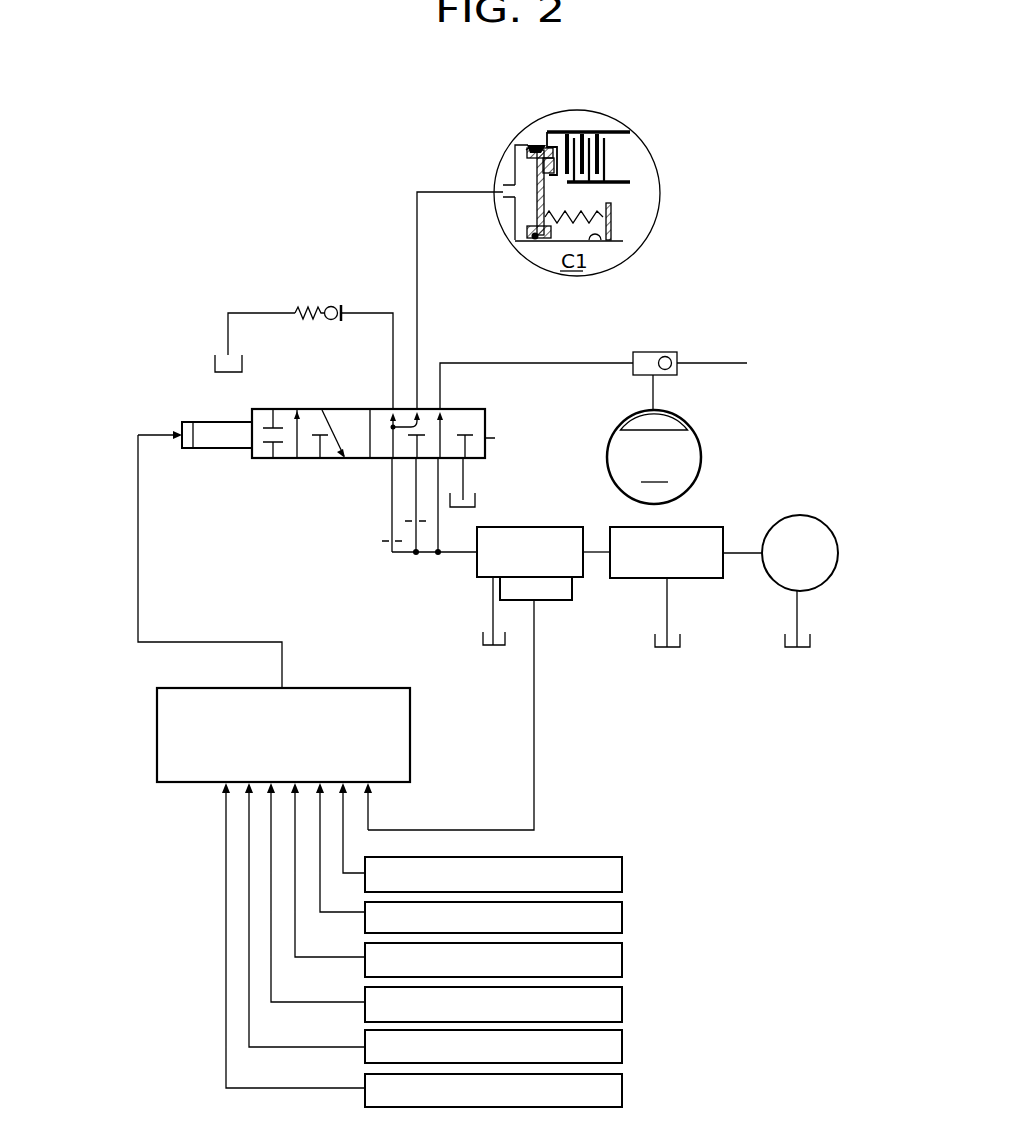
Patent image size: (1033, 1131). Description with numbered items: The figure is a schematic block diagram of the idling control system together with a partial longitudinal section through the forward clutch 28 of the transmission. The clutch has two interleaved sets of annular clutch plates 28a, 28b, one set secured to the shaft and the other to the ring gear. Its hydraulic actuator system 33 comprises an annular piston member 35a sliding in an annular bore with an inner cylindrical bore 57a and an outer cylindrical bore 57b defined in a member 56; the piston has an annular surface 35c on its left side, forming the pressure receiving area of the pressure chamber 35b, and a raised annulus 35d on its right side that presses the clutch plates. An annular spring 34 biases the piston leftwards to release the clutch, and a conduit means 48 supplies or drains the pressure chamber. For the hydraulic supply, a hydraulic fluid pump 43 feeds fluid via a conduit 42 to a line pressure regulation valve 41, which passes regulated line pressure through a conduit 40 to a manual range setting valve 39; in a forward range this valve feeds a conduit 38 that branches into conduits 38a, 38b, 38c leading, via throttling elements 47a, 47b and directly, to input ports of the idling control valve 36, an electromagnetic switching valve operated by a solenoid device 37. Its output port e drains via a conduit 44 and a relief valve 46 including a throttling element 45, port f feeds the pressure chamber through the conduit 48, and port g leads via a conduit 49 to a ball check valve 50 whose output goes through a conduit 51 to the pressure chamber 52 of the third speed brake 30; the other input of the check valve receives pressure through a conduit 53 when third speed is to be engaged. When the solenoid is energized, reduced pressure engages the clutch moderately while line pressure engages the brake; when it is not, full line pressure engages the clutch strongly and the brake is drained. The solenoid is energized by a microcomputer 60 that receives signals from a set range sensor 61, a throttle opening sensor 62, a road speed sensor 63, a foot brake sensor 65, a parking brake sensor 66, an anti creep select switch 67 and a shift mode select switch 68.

The forward hydraulic clutch 28 is at (642, 137).
The set of annular clutch plates 28a is at (558, 132).
The set of annular clutch plates 28b is at (600, 177).
The third speed brake 30 is at (702, 457).
The hydraulic actuator system 33 is at (532, 137).
The annular spring 34 is at (612, 214).
The annular piston member 35a is at (528, 158).
The pressure chamber 35b is at (522, 178).
The annular surface 35c is at (534, 207).
The raised annulus 35d is at (552, 132).
The idling control valve 36 is at (490, 438).
The solenoid device 37 is at (220, 443).
The conduit 38 is at (465, 554).
The conduit 38a is at (392, 495).
The conduit 38b is at (415, 497).
The conduit 38c is at (437, 534).
The manual range setting valve 39 is at (530, 527).
The conduit 40 is at (598, 548).
The line pressure regulation valve 41 is at (697, 527).
The conduit 42 is at (743, 552).
The hydraulic fluid pump 43 is at (838, 534).
The conduit 44 is at (393, 357).
The throttling element 45 is at (344, 310).
The relief valve 46 is at (303, 325).
The throttling element 47a is at (382, 542).
The throttling element 47b is at (409, 550).
The conduit means 48 is at (419, 311).
The conduit 49 is at (568, 362).
The ball check valve 50 is at (662, 352).
The conduit 51 is at (655, 396).
The pressure chamber 52 is at (634, 420).
The conduit 53 is at (732, 362).
The member 56 is at (521, 247).
The inner cylindrical bore 57a is at (594, 242).
The outer cylindrical bore 57b is at (529, 153).
The microcomputer 60 is at (388, 688).
The set range sensor 61 is at (562, 600).
The throttle opening sensor 62 is at (623, 874).
The road speed sensor 63 is at (623, 913).
The foot brake sensor 65 is at (623, 958).
The parking brake sensor 66 is at (623, 1003).
The anti creep select switch 67 is at (623, 1048).
The shift mode select switch 68 is at (623, 1092).